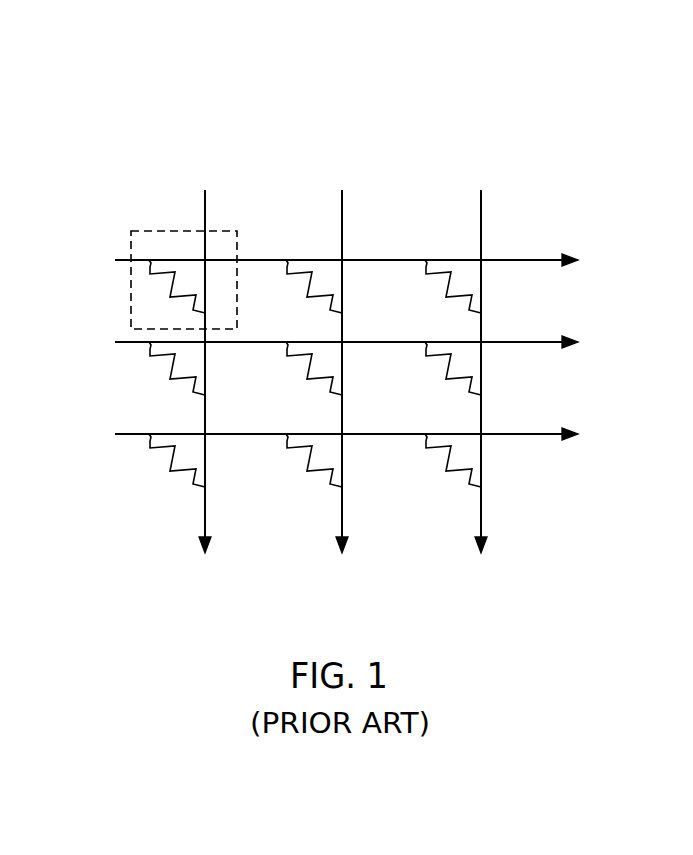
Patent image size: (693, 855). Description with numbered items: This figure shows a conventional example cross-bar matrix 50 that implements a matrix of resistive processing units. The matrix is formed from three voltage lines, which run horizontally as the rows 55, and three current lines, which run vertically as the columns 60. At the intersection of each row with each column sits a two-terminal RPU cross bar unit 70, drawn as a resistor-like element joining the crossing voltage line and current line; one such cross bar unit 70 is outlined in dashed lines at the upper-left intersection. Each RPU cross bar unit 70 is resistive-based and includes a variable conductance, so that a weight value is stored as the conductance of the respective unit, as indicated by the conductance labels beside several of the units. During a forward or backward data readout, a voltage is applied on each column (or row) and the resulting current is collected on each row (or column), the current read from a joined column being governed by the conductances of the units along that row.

The cross-bar matrix 50 is at (151, 106).
The rows 55 is at (577, 230).
The columns 60 is at (520, 192).
The RPU cross bar unit 70 is at (150, 231).